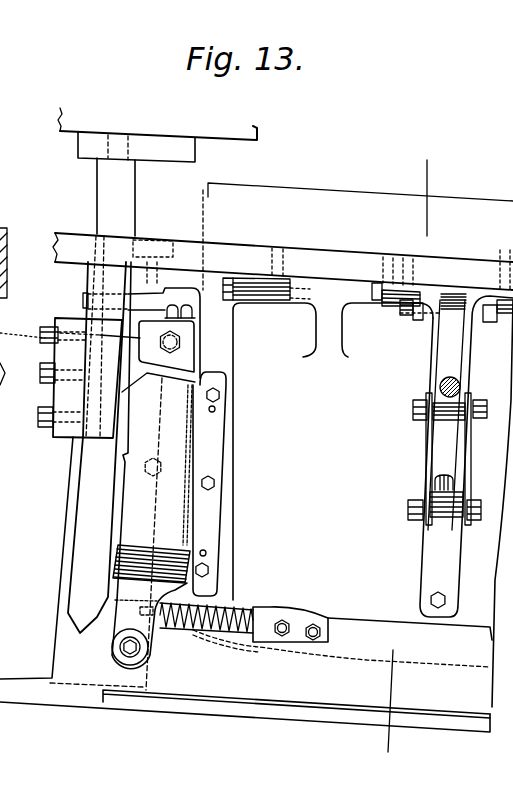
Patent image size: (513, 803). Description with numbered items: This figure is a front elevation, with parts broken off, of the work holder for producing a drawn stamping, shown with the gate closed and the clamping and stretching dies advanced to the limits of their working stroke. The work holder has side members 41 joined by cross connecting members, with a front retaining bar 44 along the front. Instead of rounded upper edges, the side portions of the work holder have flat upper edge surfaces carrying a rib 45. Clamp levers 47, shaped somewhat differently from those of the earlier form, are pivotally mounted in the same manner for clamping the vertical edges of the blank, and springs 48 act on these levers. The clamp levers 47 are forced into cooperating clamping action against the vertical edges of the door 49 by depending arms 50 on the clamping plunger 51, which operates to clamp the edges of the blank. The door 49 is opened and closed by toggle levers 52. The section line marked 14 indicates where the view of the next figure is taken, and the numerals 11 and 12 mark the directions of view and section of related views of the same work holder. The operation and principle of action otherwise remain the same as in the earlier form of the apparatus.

The clamping plunger 51 is at (263, 135).
The section line 14 is at (446, 188).
The cross bar 11 is at (28, 232).
The rib 45 is at (177, 297).
The clamp block 12 is at (28, 367).
The depending arm 50 is at (83, 523).
The side member 41 is at (59, 568).
The clamp lever 47 is at (143, 519).
The door 49 is at (373, 503).
The toggle lever 52 is at (427, 442).
The spring 48 is at (237, 606).
The front retaining bar 44 is at (231, 688).